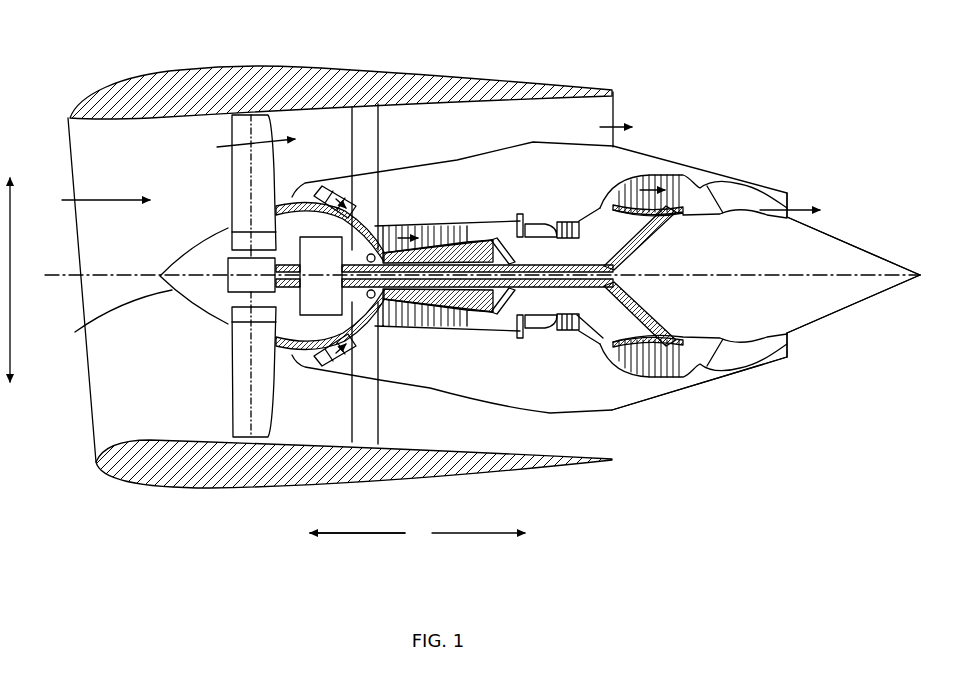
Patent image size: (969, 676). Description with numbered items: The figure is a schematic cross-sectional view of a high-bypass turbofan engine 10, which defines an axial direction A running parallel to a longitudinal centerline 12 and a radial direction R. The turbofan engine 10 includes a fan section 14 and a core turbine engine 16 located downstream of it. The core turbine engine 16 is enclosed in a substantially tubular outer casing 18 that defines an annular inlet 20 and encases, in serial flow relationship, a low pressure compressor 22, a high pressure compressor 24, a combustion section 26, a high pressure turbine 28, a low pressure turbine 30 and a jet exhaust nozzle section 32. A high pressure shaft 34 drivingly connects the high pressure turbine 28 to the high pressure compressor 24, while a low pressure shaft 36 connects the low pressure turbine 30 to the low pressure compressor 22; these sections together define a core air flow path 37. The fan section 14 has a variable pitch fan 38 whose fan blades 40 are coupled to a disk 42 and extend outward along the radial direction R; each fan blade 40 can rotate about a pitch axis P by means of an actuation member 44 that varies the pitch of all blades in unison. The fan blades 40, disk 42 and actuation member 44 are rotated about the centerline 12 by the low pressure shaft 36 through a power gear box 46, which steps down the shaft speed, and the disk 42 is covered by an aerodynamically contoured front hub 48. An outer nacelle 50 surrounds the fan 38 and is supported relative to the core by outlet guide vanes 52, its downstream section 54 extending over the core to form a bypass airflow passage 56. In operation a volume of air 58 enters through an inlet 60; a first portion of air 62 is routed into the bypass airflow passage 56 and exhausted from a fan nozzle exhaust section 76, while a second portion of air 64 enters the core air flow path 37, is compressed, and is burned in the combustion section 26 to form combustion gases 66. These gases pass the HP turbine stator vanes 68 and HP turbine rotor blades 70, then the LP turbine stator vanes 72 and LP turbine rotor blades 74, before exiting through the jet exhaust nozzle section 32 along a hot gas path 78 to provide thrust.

The turbofan engine 10 is at (722, 80).
The longitudinal centerline 12 is at (740, 273).
The fan section 14 is at (199, 133).
The core turbine engine 16 is at (471, 188).
The outer casing 18 is at (500, 403).
The annular inlet 20 is at (310, 357).
The low pressure compressor 22 is at (348, 331).
The high pressure compressor 24 is at (400, 325).
The combustion section 26 is at (532, 334).
The high pressure turbine 28 is at (588, 333).
The low pressure turbine 30 is at (682, 378).
The jet exhaust nozzle section 32 is at (727, 362).
The high pressure shaft 34 is at (560, 245).
The low pressure shaft 36 is at (634, 248).
The core air flow path 37 is at (596, 347).
The variable pitch fan 38 is at (206, 321).
The fan blades 40 is at (232, 392).
The disk 42 is at (243, 242).
The actuation member 44 is at (228, 261).
The power gear box 46 is at (332, 248).
The front hub 48 is at (111, 315).
The outer nacelle 50 is at (266, 488).
The outlet guide vanes 52 is at (379, 128).
The downstream section 54 is at (567, 88).
The bypass airflow passage 56 is at (518, 134).
The volume of air 58 is at (108, 197).
The inlet 60 is at (92, 440).
The first portion of air 62 is at (243, 143).
The second portion of air 64 is at (292, 197).
The combustion gases 66 is at (645, 176).
The HP turbine stator vanes 68 is at (545, 334).
The HP turbine rotor blades 70 is at (597, 306).
The LP turbine stator vanes 72 is at (617, 364).
The LP turbine rotor blades 74 is at (620, 383).
The fan nozzle exhaust section 76 is at (600, 113).
The hot gas path 78 is at (604, 194).
The pitch axis P is at (252, 127).
The radial direction R is at (9, 280).
The axial direction A is at (417, 534).